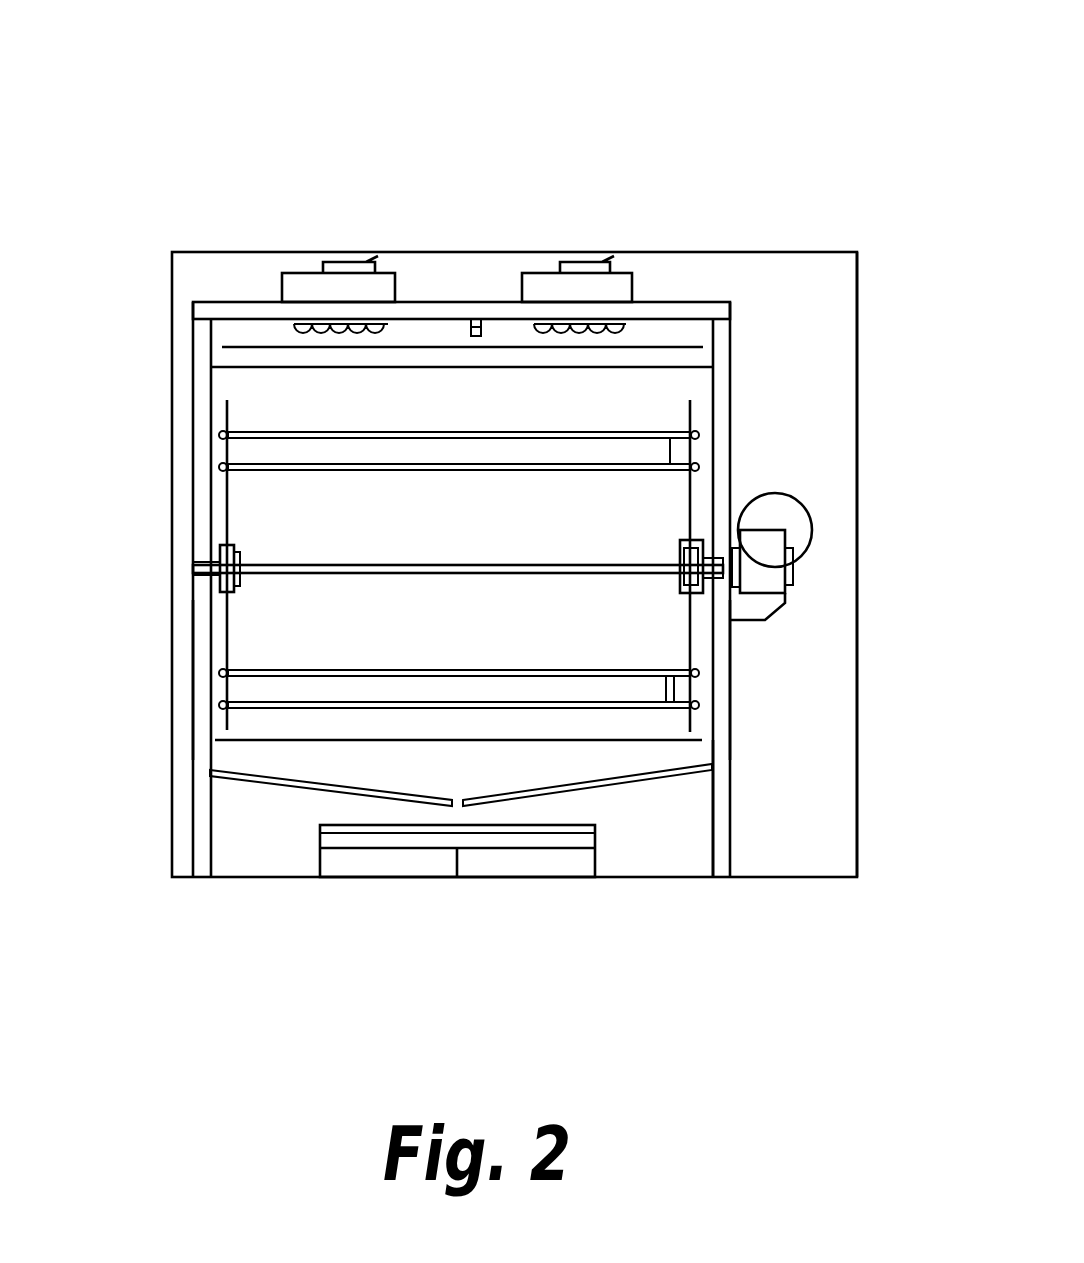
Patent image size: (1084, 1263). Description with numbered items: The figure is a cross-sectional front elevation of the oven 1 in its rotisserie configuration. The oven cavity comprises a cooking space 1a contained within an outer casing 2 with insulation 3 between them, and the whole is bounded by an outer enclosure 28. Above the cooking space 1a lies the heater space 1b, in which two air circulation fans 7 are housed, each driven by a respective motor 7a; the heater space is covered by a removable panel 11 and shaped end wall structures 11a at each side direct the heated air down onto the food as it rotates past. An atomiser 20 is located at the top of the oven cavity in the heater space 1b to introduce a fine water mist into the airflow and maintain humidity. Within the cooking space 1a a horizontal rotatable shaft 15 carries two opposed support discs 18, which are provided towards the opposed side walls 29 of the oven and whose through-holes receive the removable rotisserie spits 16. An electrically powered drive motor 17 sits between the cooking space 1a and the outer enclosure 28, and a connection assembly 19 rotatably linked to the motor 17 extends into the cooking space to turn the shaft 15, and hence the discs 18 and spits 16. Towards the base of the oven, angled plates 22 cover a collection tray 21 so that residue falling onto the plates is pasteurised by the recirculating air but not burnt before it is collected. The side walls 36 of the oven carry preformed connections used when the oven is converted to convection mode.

The oven 1 is at (688, 128).
The cooking space 1a is at (255, 625).
The heater space 1b is at (650, 330).
The outer casing 2 is at (730, 877).
The insulation 3 is at (720, 877).
The air circulation fan 7 is at (275, 322).
The motor 7a is at (345, 290).
The panel 11 is at (238, 345).
The shaped end wall structure 11a is at (670, 355).
The horizontal rotatable shaft 15 is at (340, 562).
The spit 16 is at (510, 468).
The drive motor 17 is at (767, 545).
The support disc 18 is at (226, 418).
The connection assembly 19 is at (712, 557).
The atomiser 20 is at (470, 336).
The tray 21 is at (335, 860).
The angled plate 22 is at (258, 785).
The outer enclosure 28 is at (857, 395).
The side wall 29 is at (210, 655).
The side wall 36 is at (722, 647).